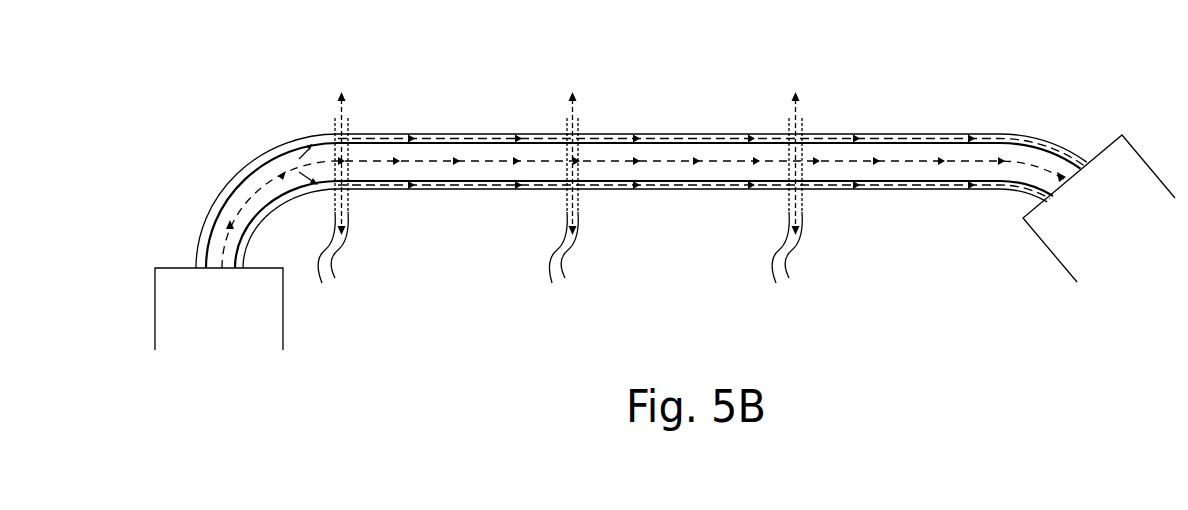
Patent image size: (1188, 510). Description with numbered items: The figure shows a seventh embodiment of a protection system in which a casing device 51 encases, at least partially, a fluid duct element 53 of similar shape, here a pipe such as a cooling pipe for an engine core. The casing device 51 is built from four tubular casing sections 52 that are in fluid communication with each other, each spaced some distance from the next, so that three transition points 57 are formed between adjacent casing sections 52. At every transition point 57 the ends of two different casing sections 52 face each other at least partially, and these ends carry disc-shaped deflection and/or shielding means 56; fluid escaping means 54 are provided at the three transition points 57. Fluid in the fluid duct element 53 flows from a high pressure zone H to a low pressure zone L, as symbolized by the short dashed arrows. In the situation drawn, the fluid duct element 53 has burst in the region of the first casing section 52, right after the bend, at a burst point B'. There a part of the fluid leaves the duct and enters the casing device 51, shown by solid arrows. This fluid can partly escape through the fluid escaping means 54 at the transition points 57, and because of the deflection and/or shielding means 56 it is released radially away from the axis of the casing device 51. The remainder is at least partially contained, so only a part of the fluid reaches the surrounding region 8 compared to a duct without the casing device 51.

The region surrounding the casing device 8 is at (702, 30).
The casing device 51 is at (261, 96).
The casing section 52 is at (262, 221).
The fluid duct element 53 is at (220, 207).
The fluid escaping means 54 is at (344, 104).
The deflection and/or shielding means 56 is at (550, 260).
The transition point 57 is at (336, 134).
The burst point B' is at (273, 141).
The high pressure zone H is at (219, 309).
The low pressure zone L is at (1099, 208).